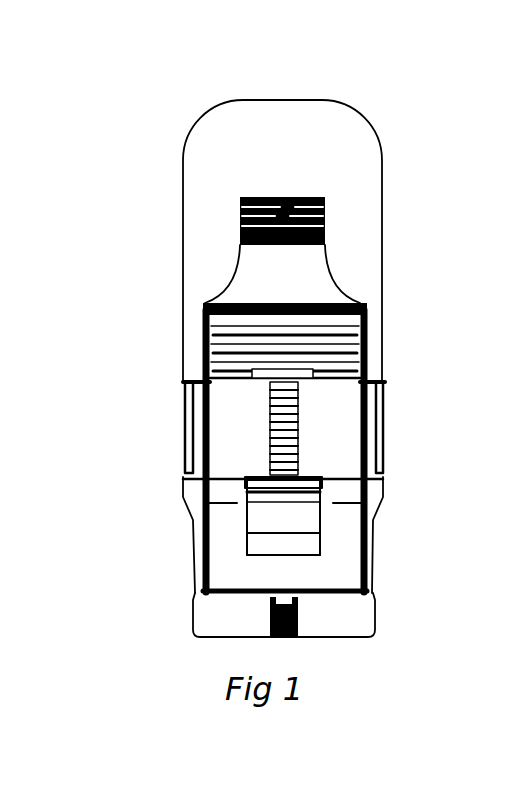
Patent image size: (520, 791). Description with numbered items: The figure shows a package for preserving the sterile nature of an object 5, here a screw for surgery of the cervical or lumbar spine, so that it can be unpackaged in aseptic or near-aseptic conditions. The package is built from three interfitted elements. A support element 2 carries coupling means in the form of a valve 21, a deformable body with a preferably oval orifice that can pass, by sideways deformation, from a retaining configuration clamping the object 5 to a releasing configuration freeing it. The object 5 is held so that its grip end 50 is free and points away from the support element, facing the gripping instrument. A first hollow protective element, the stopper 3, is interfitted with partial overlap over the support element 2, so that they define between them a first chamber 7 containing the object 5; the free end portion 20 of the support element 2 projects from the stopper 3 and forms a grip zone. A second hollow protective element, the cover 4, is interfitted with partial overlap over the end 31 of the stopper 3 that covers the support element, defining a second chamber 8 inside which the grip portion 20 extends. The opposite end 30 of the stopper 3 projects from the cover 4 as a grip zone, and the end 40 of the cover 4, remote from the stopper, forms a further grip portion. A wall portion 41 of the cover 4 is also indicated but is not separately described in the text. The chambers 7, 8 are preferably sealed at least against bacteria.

The object 5 is at (497, 146).
The second chamber 8 is at (330, 128).
The end of the cover 40 is at (383, 193).
The cover 4 is at (384, 260).
The support element 2 is at (257, 272).
The free end portion 20 is at (265, 252).
The valve 21 is at (215, 335).
The end of the stopper 31 is at (368, 353).
The side wall channel 41 is at (385, 413).
The first chamber 7 is at (342, 542).
The end of the stopper 30 is at (372, 536).
The grip end 50 is at (265, 548).
The stopper 3 is at (377, 617).